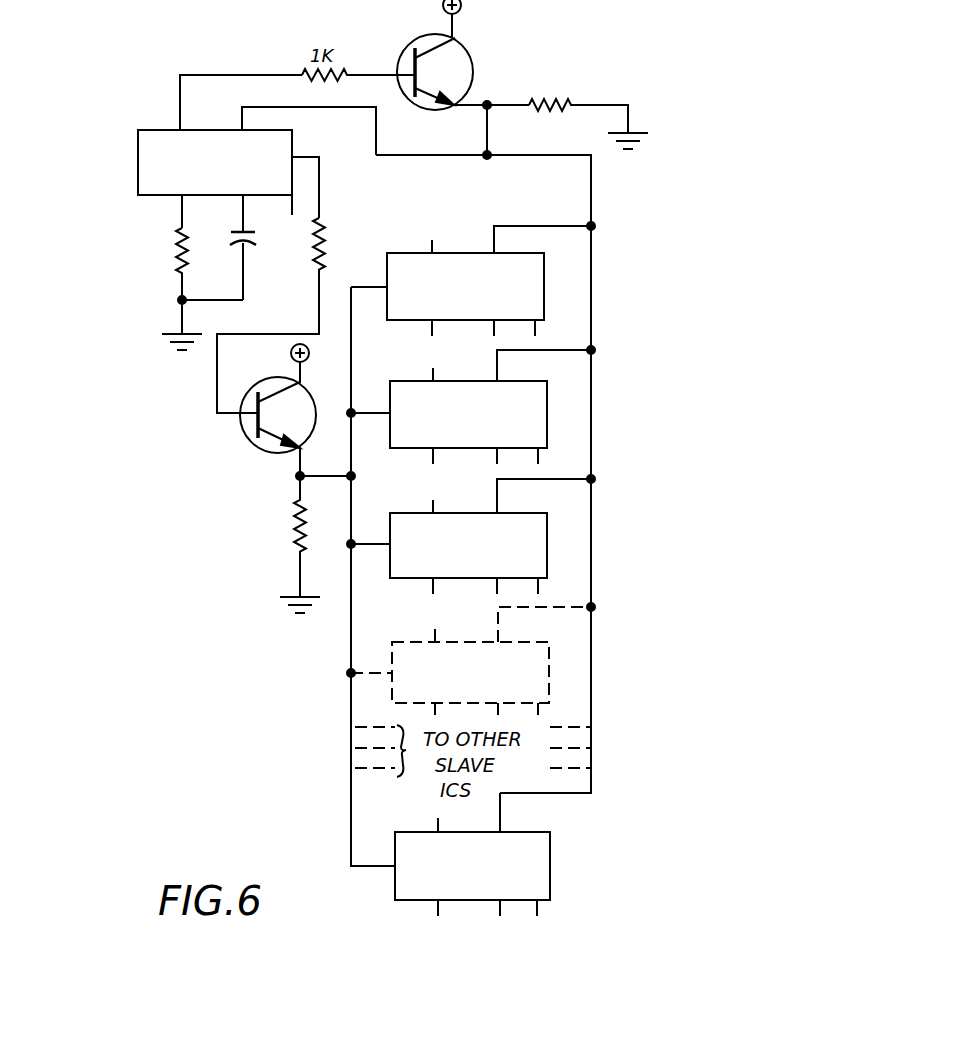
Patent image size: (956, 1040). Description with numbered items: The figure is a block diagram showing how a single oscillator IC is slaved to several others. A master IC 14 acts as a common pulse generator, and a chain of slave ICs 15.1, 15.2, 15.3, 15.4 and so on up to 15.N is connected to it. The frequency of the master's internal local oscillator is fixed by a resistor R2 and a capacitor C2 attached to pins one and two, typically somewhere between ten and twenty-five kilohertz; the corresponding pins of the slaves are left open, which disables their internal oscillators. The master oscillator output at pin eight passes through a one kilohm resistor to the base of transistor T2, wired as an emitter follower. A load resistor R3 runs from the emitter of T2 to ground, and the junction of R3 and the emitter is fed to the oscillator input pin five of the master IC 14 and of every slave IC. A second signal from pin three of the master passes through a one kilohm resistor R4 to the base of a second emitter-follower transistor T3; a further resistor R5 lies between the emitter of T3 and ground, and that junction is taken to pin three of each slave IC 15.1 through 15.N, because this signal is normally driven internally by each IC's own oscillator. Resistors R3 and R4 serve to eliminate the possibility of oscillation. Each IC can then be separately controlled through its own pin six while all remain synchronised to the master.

The master IC 14 is at (138, 158).
The slave IC 15.1 is at (544, 292).
The slave IC 15.2 is at (547, 414).
The slave IC 15.3 is at (547, 545).
The slave IC 15.4 is at (549, 674).
The slave IC 15.N is at (550, 867).
The transistor T2 is at (470, 64).
The second emitter follower transistor T3 is at (248, 441).
The resistor R2 is at (193, 289).
The load resistor R3 is at (588, 112).
The resistor R4 is at (287, 315).
The further resistor R5 is at (289, 544).
The capacitor C2 is at (259, 240).